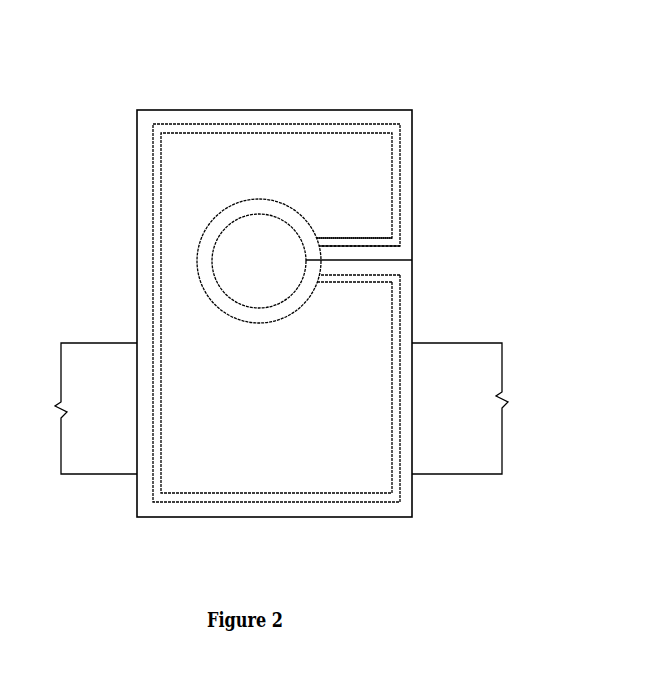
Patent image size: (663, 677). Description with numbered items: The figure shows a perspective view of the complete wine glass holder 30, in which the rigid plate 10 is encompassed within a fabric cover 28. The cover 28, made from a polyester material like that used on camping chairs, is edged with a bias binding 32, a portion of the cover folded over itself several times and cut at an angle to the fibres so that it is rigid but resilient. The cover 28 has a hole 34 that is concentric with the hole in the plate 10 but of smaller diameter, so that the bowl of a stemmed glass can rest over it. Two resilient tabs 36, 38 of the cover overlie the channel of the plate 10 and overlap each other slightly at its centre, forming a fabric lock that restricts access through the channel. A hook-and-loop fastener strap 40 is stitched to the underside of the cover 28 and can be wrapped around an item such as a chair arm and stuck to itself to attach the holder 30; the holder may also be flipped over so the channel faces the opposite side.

The plate 10 is at (202, 163).
The cover 28 is at (138, 175).
The wine glass holder 30 is at (503, 122).
The bias binding 32 is at (165, 500).
The hole 34 is at (258, 271).
The tab 36 is at (369, 247).
The tab 38 is at (352, 273).
The hook-and-loop fastener strap 40 is at (455, 440).